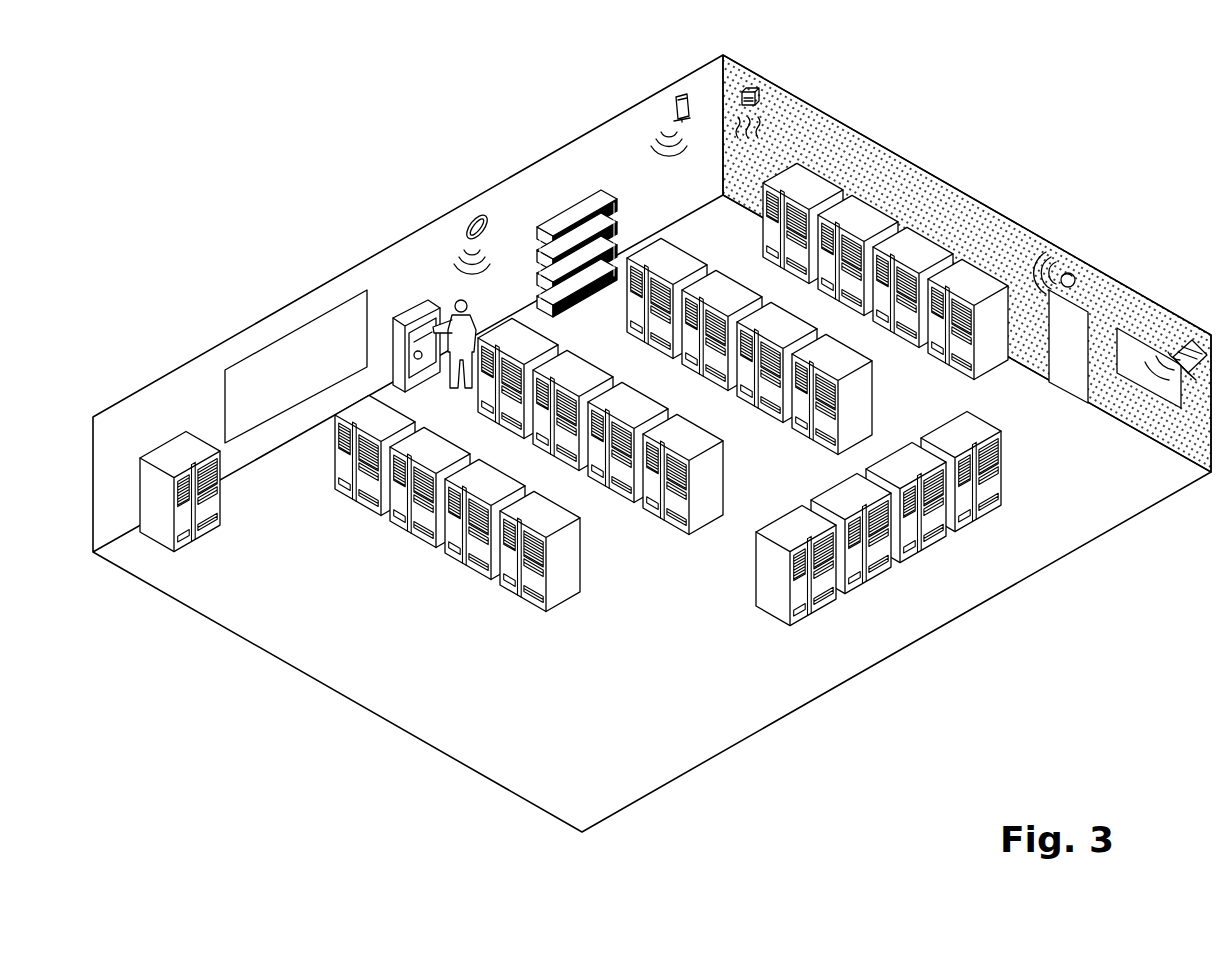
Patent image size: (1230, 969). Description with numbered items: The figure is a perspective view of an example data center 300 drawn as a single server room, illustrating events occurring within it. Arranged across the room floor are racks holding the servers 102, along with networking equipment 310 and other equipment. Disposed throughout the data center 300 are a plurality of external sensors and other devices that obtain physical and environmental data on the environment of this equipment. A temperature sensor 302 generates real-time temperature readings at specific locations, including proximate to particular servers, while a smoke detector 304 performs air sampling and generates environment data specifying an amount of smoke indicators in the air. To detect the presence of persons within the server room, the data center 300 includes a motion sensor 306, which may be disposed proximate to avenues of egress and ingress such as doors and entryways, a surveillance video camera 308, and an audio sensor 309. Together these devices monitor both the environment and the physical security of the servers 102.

The data center 300 is at (316, 103).
The servers 102 is at (364, 541).
The temperature sensor 302 is at (753, 90).
The smoke detector 304 is at (473, 213).
The motion sensor 306 is at (1068, 272).
The surveillance video camera 308 is at (1191, 340).
The audio sensor 309 is at (673, 110).
The networking equipment 310 is at (562, 183).